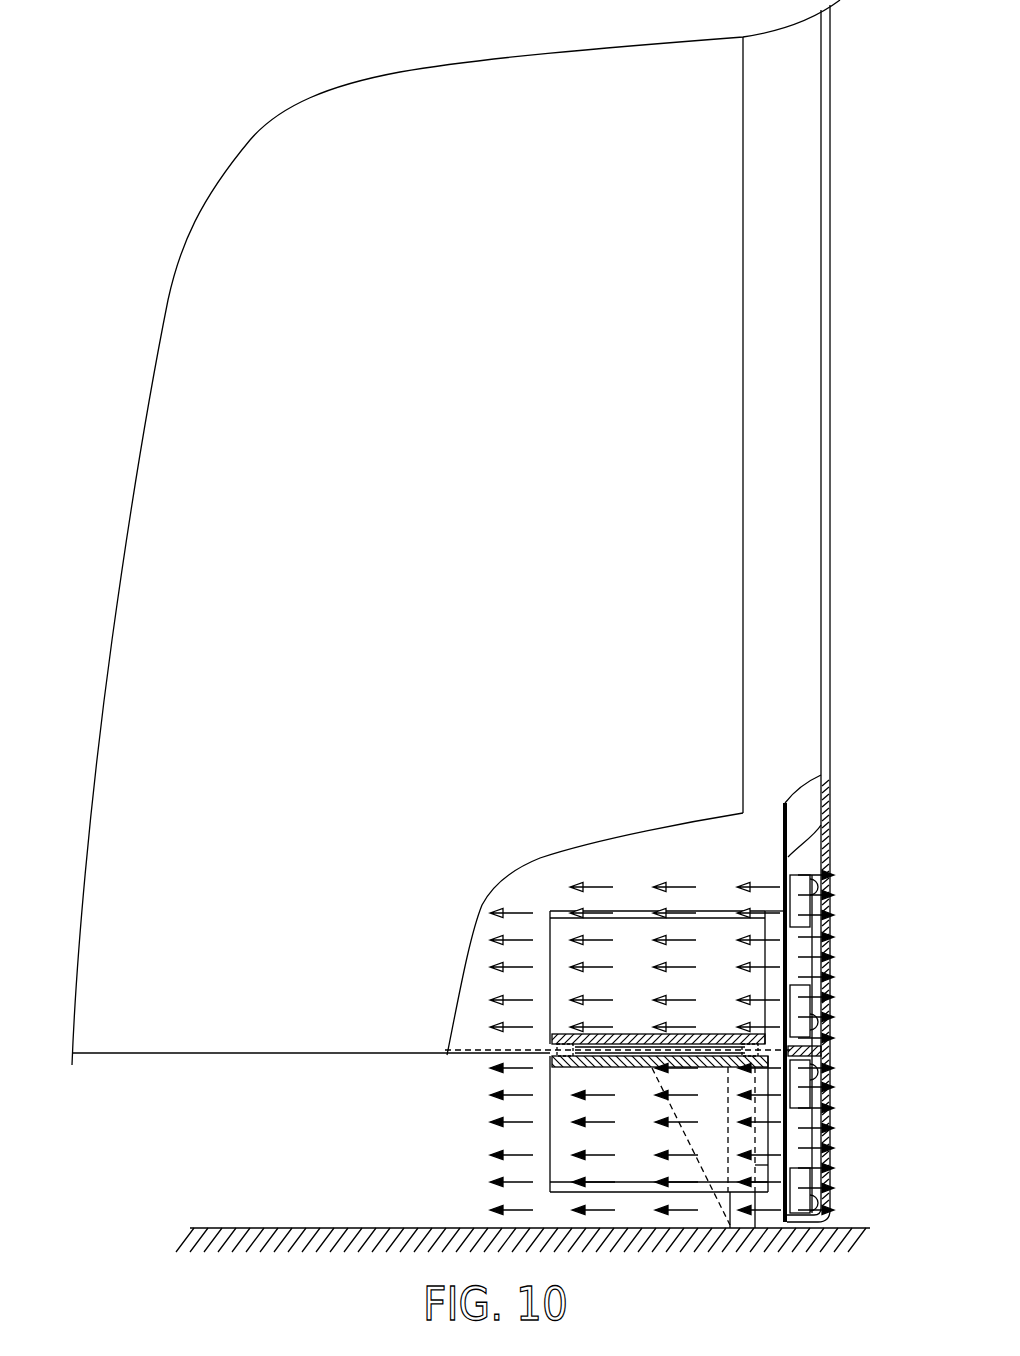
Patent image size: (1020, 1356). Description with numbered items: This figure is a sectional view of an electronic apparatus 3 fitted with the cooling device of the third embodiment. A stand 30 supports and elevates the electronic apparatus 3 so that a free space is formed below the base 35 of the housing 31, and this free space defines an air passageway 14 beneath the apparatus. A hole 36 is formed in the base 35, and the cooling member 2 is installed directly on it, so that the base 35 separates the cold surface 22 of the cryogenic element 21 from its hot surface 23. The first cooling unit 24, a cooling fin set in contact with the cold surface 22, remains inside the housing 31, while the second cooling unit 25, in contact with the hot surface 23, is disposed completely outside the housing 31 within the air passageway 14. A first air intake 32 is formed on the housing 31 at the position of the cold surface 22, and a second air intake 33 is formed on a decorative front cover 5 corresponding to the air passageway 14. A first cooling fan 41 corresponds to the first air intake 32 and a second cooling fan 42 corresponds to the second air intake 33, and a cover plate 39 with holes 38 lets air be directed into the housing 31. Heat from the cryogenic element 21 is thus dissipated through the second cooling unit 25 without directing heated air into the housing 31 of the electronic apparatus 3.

The electronic apparatus 3 is at (848, 66).
The housing 31 is at (273, 158).
The cover plate 39 is at (800, 454).
The holes 38 is at (833, 858).
The first cooling fan 41 is at (798, 897).
The first cooling unit 24 is at (792, 960).
The second air intake 33 is at (795, 1114).
The second cooling fan 42 is at (827, 1216).
The first air intake 32 is at (787, 970).
The second cooling unit 25 is at (790, 1163).
The hole 36 is at (833, 1055).
The decorative front cover 5 is at (812, 1227).
The air passageway 14 is at (420, 1183).
The cooling member 2 is at (549, 913).
The cold surface 22 is at (577, 1033).
The base 35 is at (455, 1050).
The cryogenic element 21 is at (552, 1043).
The hot surface 23 is at (620, 1066).
The stand 30 is at (737, 1200).